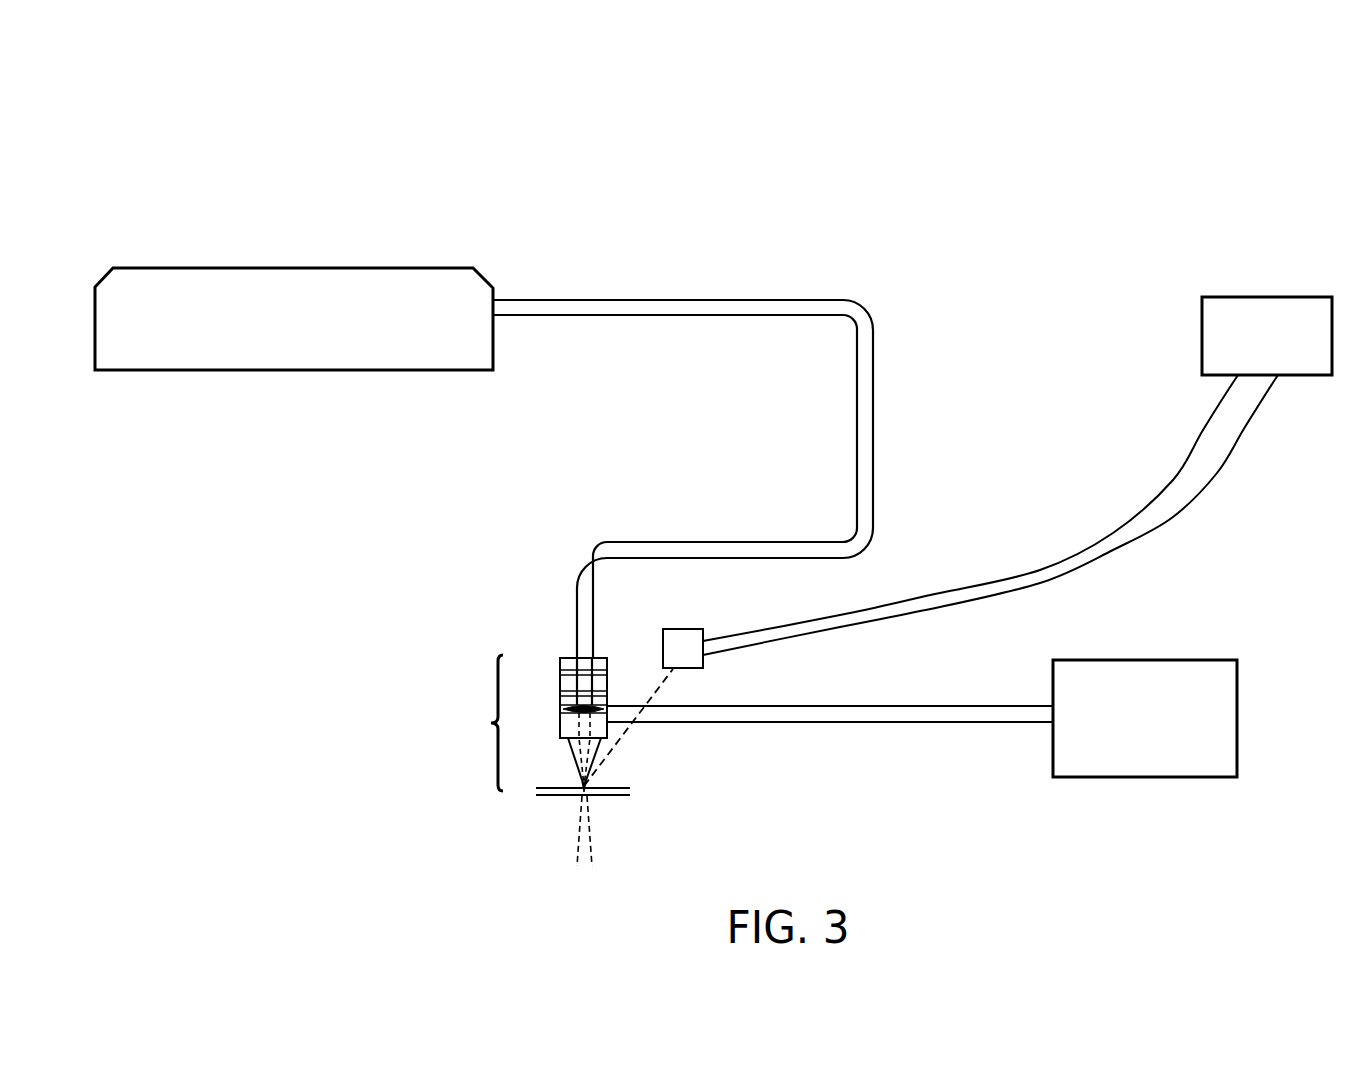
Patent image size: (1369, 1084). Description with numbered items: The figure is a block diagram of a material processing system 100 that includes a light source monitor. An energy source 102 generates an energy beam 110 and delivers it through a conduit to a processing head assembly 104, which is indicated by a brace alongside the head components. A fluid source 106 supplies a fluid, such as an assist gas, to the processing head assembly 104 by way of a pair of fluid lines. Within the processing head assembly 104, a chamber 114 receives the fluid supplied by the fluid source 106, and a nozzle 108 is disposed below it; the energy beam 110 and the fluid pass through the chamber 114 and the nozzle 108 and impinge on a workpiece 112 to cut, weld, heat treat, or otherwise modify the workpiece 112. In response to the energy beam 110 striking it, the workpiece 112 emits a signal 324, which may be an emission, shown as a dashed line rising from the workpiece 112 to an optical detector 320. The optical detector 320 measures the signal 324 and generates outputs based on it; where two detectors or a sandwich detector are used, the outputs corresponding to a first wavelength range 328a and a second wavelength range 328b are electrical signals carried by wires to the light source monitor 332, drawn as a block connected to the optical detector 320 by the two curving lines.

The material processing system 100 is at (788, 123).
The energy source 102 is at (402, 267).
The processing head assembly 104 is at (491, 723).
The fluid source 106 is at (1181, 659).
The nozzle 108 is at (591, 778).
The energy beam 110 is at (591, 852).
The workpiece 112 is at (538, 797).
The chamber 114 is at (560, 722).
The optical detector 320 is at (679, 629).
The signal 324 is at (623, 740).
The first wavelength range output 328a is at (1219, 467).
The second wavelength range output 328b is at (1182, 458).
The light source monitor 332 is at (1273, 296).